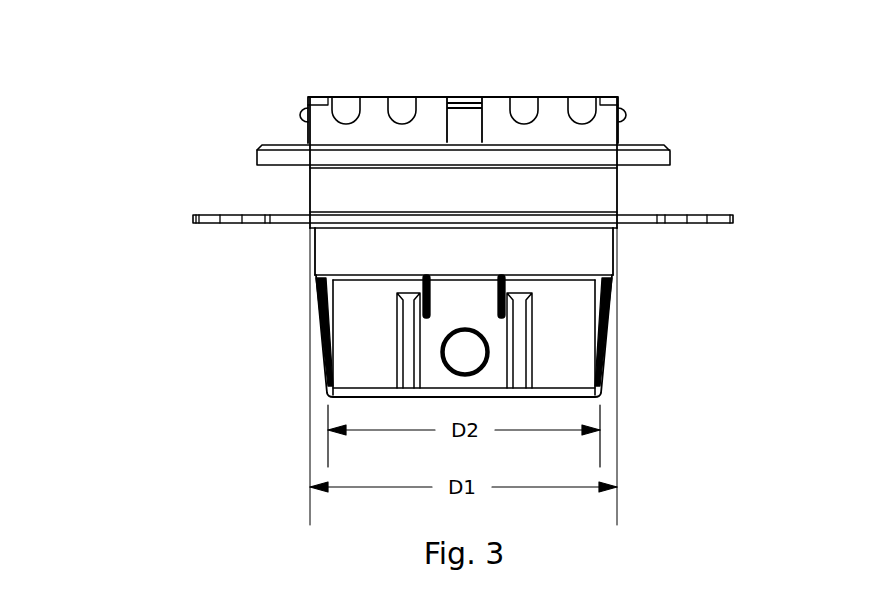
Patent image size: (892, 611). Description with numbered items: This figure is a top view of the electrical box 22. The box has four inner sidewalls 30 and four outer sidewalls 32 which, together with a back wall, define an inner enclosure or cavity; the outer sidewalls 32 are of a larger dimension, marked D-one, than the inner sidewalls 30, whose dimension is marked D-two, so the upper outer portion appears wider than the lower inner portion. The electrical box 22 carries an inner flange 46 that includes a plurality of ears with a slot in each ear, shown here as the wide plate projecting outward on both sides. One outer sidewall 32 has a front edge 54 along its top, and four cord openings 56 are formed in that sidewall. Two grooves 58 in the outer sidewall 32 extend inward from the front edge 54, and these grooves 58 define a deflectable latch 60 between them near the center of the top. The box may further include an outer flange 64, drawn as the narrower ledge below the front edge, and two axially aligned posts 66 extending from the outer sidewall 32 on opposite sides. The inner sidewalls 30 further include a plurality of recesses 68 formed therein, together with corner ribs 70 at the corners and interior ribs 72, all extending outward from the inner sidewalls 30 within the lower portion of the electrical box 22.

The electrical box 22 is at (178, 185).
The inner sidewalls 30 is at (571, 353).
The outer sidewalls 32 is at (477, 203).
The inner flange 46 is at (698, 226).
The front edge 54 is at (553, 97).
The cord openings 56 is at (580, 107).
The grooves 58 is at (432, 110).
The deflectable latch 60 is at (462, 105).
The outer flange 64 is at (672, 153).
The axially aligned posts 66 is at (300, 115).
The recesses 68 is at (412, 358).
The corner ribs 70 is at (318, 306).
The interior ribs 72 is at (430, 299).